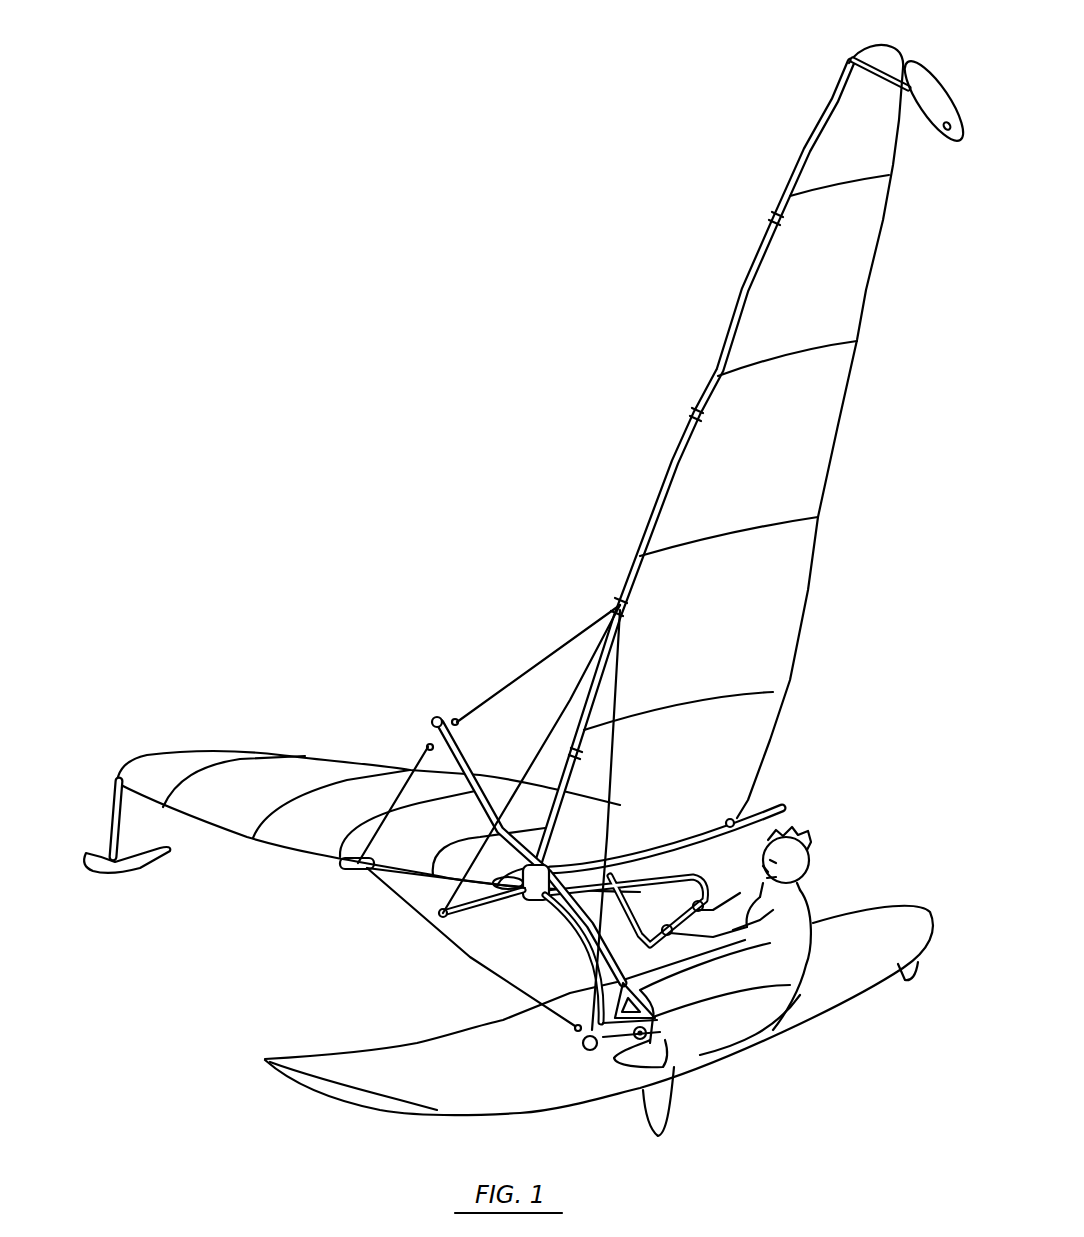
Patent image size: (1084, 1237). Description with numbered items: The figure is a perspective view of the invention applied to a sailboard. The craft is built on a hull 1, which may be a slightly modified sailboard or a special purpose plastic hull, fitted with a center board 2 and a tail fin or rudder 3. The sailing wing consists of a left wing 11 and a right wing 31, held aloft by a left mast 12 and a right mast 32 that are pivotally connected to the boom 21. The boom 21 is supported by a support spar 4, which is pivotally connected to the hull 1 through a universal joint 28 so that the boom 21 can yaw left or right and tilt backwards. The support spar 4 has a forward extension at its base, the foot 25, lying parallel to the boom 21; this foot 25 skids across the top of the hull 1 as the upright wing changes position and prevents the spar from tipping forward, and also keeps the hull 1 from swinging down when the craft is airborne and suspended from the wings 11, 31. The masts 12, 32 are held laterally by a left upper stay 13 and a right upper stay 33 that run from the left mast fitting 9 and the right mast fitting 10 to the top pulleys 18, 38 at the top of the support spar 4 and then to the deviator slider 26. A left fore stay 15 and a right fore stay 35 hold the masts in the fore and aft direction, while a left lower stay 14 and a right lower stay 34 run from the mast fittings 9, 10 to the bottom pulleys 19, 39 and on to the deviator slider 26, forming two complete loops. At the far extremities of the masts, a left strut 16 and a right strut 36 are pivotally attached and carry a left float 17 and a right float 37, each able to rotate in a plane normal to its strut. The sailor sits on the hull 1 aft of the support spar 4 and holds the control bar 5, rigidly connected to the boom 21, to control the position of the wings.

The hull 1 is at (599, 1010).
The center board 2 is at (674, 1101).
The tail fin or rudder 3 is at (906, 984).
The support spar 4 is at (531, 853).
The control bar 5 is at (664, 876).
The left mast fitting 9 is at (633, 606).
The right mast fitting 10 is at (429, 878).
The left wing 11 is at (772, 458).
The left mast 12 is at (674, 458).
The left upper stay 13 is at (538, 663).
The left lower stay 14 is at (610, 836).
The left fore stay 15 is at (531, 759).
The left strut 16 is at (879, 81).
The left float 17 is at (933, 110).
The left top pulley 18 is at (446, 713).
The left bottom pulley 19 is at (604, 1050).
The boom 21 is at (516, 895).
The foot 25 is at (627, 1042).
The deviator slider 26 is at (595, 972).
The universal joint 28 is at (655, 1037).
The right wing 31 is at (270, 790).
The right mast 32 is at (234, 841).
The right upper stay 33 is at (410, 822).
The right lower stay 34 is at (471, 947).
The right fore stay 35 is at (446, 887).
The right strut 36 is at (96, 819).
The right float 37 is at (127, 874).
The right top pulley 38 is at (393, 793).
The right bottom pulley 39 is at (554, 1036).